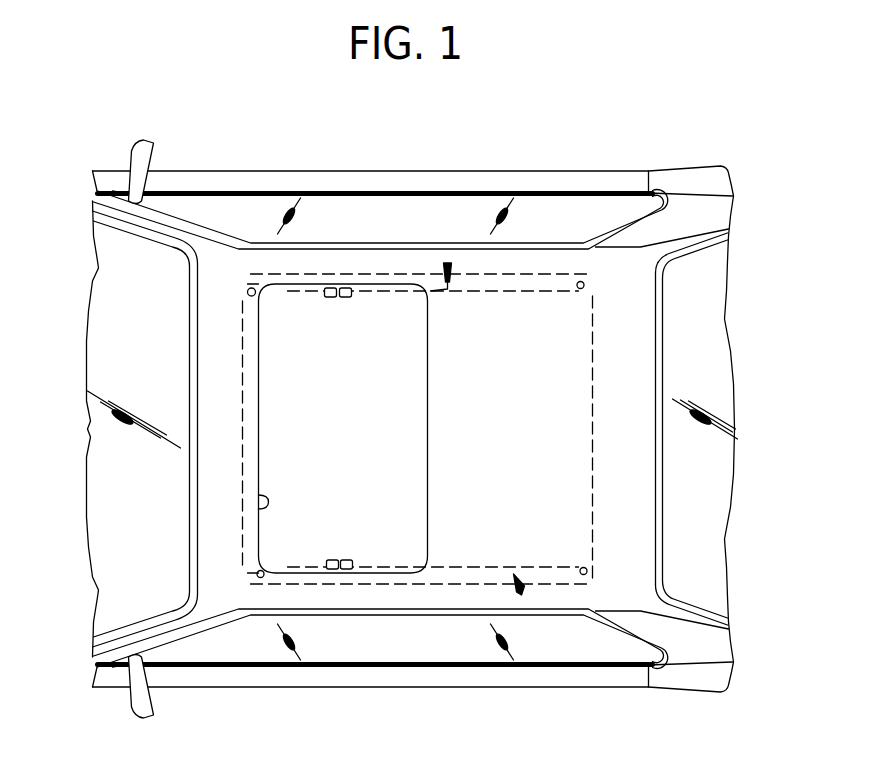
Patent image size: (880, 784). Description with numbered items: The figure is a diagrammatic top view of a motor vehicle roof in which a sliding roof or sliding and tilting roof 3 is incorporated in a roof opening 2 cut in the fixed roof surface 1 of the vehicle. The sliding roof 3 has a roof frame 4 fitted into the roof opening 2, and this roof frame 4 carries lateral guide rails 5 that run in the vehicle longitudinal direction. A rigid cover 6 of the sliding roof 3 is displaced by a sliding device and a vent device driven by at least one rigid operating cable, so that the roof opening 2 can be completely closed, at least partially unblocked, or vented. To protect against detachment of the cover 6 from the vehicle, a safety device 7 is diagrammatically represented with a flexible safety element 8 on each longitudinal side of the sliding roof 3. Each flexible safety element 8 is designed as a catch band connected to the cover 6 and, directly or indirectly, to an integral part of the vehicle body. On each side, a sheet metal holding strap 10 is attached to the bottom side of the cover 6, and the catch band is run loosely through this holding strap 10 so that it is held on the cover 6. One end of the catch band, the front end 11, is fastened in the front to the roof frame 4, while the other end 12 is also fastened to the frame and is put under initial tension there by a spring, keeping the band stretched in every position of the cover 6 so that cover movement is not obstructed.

The fixed roof surface 1 is at (627, 332).
The roof opening 2 is at (258, 500).
The sliding roof or sliding and tilting roof 3 is at (225, 355).
The roof frame 4 is at (594, 490).
The lateral guide rails 5 is at (407, 277).
The rigid cover 6 is at (328, 445).
The safety device 7 is at (447, 264).
The flexible safety element 8 is at (488, 288).
The sheet metal holding strap 10 is at (340, 287).
The front end of catch band 11 is at (251, 287).
The rear end of catch band 12 is at (581, 280).